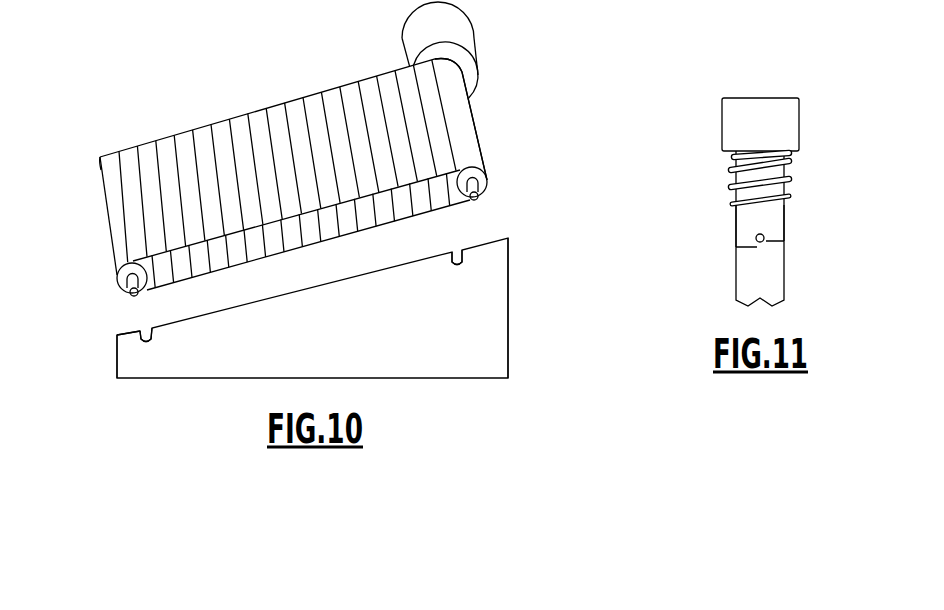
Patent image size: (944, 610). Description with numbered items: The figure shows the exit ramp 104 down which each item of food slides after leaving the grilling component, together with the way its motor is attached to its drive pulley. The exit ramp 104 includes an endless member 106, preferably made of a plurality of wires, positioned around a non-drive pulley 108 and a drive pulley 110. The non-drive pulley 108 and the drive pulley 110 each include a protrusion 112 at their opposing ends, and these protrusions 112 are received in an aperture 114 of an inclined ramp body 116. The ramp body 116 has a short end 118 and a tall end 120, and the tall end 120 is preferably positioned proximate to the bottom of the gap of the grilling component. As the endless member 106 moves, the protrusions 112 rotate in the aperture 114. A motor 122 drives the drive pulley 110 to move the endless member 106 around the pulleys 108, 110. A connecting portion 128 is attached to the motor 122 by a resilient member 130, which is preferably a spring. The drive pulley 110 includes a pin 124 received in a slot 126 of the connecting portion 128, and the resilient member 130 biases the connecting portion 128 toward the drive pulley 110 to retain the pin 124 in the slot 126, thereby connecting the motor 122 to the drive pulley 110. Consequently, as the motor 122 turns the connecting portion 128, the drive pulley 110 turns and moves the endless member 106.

In FIG. 10, the exit ramp 104 is at (218, 52).
In FIG. 10, the endless member 106 is at (196, 129).
In FIG. 10, the non-drive pulley 108 is at (101, 158).
In FIG. 10, the drive pulley 110 is at (463, 116).
In FIG. 11, the drive pulley 110 is at (774, 283).
In FIG. 10, the protrusion 112 is at (482, 191).
In FIG. 10, the aperture 114 is at (456, 265).
In FIG. 10, the inclined ramp body 116 is at (416, 358).
In FIG. 10, the short end 118 is at (117, 357).
In FIG. 10, the tall end 120 is at (509, 333).
In FIG. 10, the motor 122 is at (453, 30).
In FIG. 11, the motor 122 is at (758, 117).
In FIG. 11, the pin 124 is at (760, 243).
In FIG. 11, the slot 126 is at (780, 242).
In FIG. 11, the connecting portion 128 is at (774, 217).
In FIG. 11, the resilient member 130 is at (790, 173).